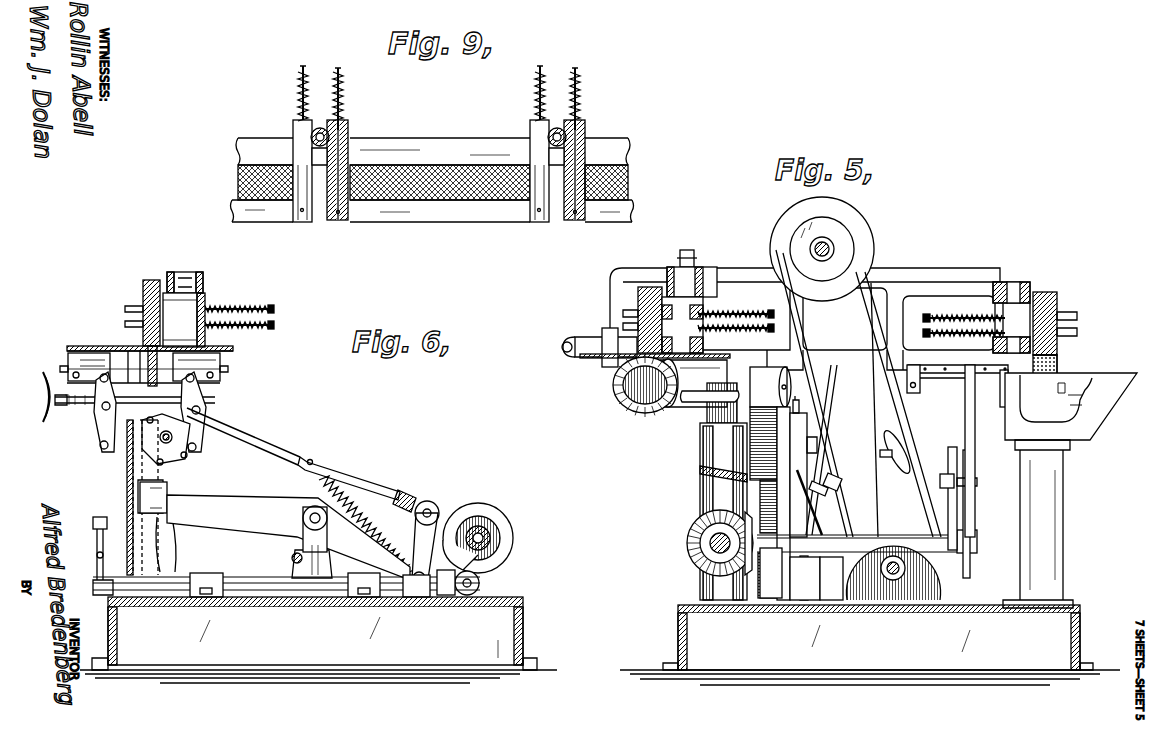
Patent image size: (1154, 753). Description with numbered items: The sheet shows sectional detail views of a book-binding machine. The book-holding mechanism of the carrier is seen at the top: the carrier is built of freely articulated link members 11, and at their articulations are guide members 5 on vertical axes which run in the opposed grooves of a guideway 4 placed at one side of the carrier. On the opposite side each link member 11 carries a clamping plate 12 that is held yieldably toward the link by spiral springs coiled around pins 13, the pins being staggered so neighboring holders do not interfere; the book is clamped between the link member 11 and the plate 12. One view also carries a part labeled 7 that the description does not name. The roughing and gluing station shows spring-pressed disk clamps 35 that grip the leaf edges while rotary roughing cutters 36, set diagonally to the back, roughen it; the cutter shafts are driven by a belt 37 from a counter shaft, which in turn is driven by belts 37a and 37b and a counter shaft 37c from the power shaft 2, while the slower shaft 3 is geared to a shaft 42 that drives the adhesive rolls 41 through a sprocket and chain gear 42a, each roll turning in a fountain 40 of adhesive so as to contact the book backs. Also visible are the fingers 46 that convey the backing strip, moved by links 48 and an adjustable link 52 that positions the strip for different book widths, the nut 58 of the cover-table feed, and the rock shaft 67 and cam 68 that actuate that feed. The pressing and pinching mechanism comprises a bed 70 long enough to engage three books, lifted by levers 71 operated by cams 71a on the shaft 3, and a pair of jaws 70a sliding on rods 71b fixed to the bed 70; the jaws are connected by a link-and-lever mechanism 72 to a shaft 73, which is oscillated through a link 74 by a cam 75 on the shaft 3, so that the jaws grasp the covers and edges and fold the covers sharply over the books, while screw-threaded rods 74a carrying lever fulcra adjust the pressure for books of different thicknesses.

In FIG. 6, the power shaft 2 is at (290, 557).
In FIG. 5, the power shaft 2 is at (890, 573).
In FIG. 6, the shaft 3 is at (492, 538).
In FIG. 5, the shaft 3 is at (687, 543).
In FIG. 6, the guideway 4 is at (205, 278).
In FIG. 5, the guideway 4 is at (717, 274).
In FIG. 9, the guide members 5 is at (320, 125).
In FIG. 6, the guide members 5 is at (186, 273).
In FIG. 5, the guide members 5 is at (692, 293).
In FIG. 6, the hatched plate 7 is at (148, 280).
In FIG. 5, the hatched plate 7 is at (1047, 294).
In FIG. 9, the link members 11 is at (252, 142).
In FIG. 5, the link members 11 is at (703, 305).
In FIG. 9, the plate 12 is at (268, 212).
In FIG. 6, the plate 12 is at (143, 297).
In FIG. 5, the plate 12 is at (637, 305).
In FIG. 9, the pins 13 is at (337, 70).
In FIG. 6, the pins 13 is at (250, 322).
In FIG. 5, the pins 13 is at (851, 323).
In FIG. 5, the disk clamps 35 is at (600, 358).
In FIG. 5, the roughing cutters 36 is at (633, 404).
In FIG. 5, the belt 37 is at (749, 483).
In FIG. 5, the belt 37a is at (872, 268).
In FIG. 5, the belt 37b is at (857, 250).
In FIG. 5, the counter shaft 37c is at (826, 247).
In FIG. 5, the fountains 40 is at (1075, 402).
In FIG. 5, the rolls 41 is at (1057, 370).
In FIG. 5, the shaft 42 is at (867, 540).
In FIG. 5, the sprocket and chain gear 42a is at (967, 474).
In FIG. 5, the fingers 46 is at (950, 377).
In FIG. 5, the links 48 is at (845, 392).
In FIG. 5, the adjustable link 52 is at (836, 490).
In FIG. 6, the nut 58 is at (128, 495).
In FIG. 6, the transverse rock shaft 67 is at (175, 578).
In FIG. 6, the cam 68 is at (495, 521).
In FIG. 6, the bed 70 is at (150, 367).
In FIG. 6, the jaws 70a is at (243, 353).
In FIG. 6, the levers 71 is at (245, 504).
In FIG. 6, the cams 71a is at (498, 563).
In FIG. 6, the rods 71b is at (243, 374).
In FIG. 6, the link-and-lever mechanism 72 is at (105, 425).
In FIG. 6, the shaft 73 is at (152, 430).
In FIG. 6, the link 74 is at (360, 484).
In FIG. 6, the screw-threaded rods 74a is at (72, 405).
In FIG. 6, the cam 75 is at (43, 402).